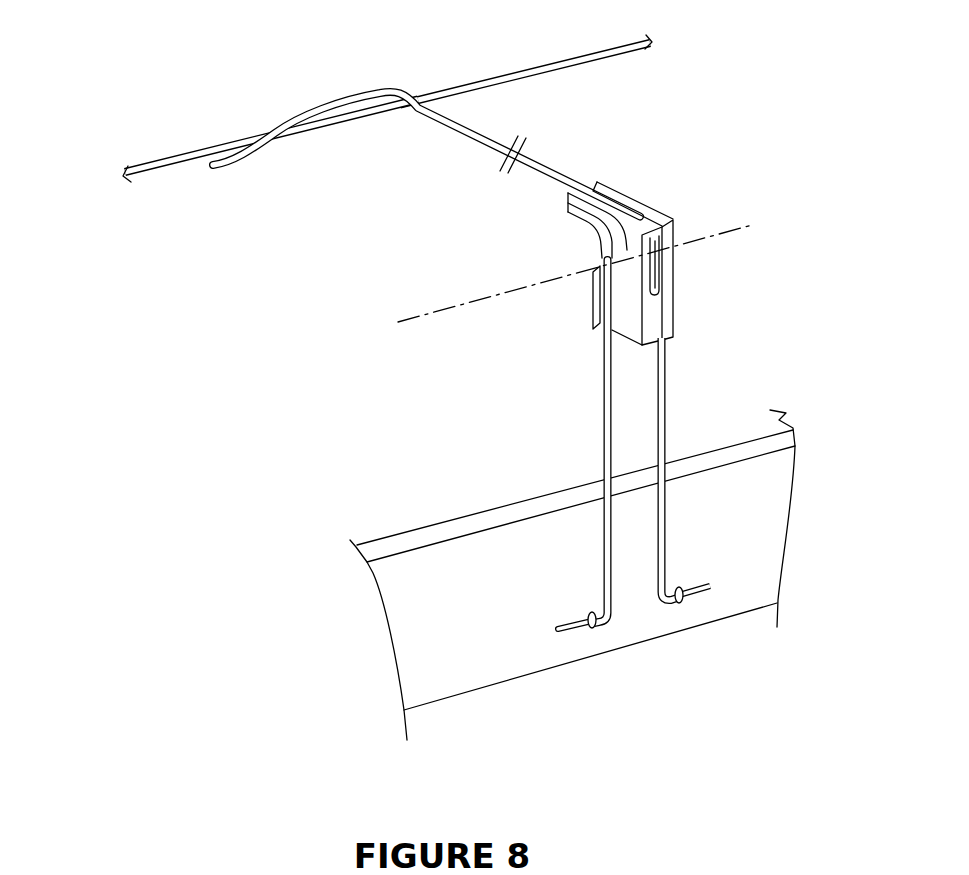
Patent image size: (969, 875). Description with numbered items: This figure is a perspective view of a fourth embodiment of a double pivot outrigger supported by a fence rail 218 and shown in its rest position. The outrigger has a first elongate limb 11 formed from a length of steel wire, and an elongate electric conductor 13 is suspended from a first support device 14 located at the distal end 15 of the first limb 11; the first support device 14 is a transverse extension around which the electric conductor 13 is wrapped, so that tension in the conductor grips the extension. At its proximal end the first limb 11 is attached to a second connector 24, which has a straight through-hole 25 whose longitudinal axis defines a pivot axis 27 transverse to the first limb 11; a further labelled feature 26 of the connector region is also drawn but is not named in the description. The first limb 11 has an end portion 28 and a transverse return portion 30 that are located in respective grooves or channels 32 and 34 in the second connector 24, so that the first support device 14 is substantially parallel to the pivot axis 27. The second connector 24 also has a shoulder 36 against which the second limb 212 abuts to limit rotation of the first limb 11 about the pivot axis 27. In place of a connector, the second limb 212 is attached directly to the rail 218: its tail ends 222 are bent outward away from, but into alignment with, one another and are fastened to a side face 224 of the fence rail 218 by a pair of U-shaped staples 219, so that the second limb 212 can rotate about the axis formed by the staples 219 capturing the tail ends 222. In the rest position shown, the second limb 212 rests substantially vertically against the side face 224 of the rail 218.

The first elongate limb 11 is at (527, 152).
The elongate electric conductor 13 is at (578, 58).
The first support device 14 is at (262, 133).
The distal end 15 is at (418, 92).
The second connector 24 is at (583, 237).
The through-hole 25 is at (590, 227).
The clip inner portion 26 is at (626, 252).
The pivot axis 27 is at (443, 309).
The end portion 28 is at (633, 203).
The transverse return portion 30 is at (659, 265).
The groove 32 is at (655, 222).
The channel 34 is at (658, 307).
The shoulder 36 is at (592, 312).
The second limb 212 is at (604, 407).
The fence rail 218 is at (440, 560).
The U-shaped staples 219 is at (608, 624).
The tail ends 222 is at (568, 632).
The side face 224 is at (750, 518).